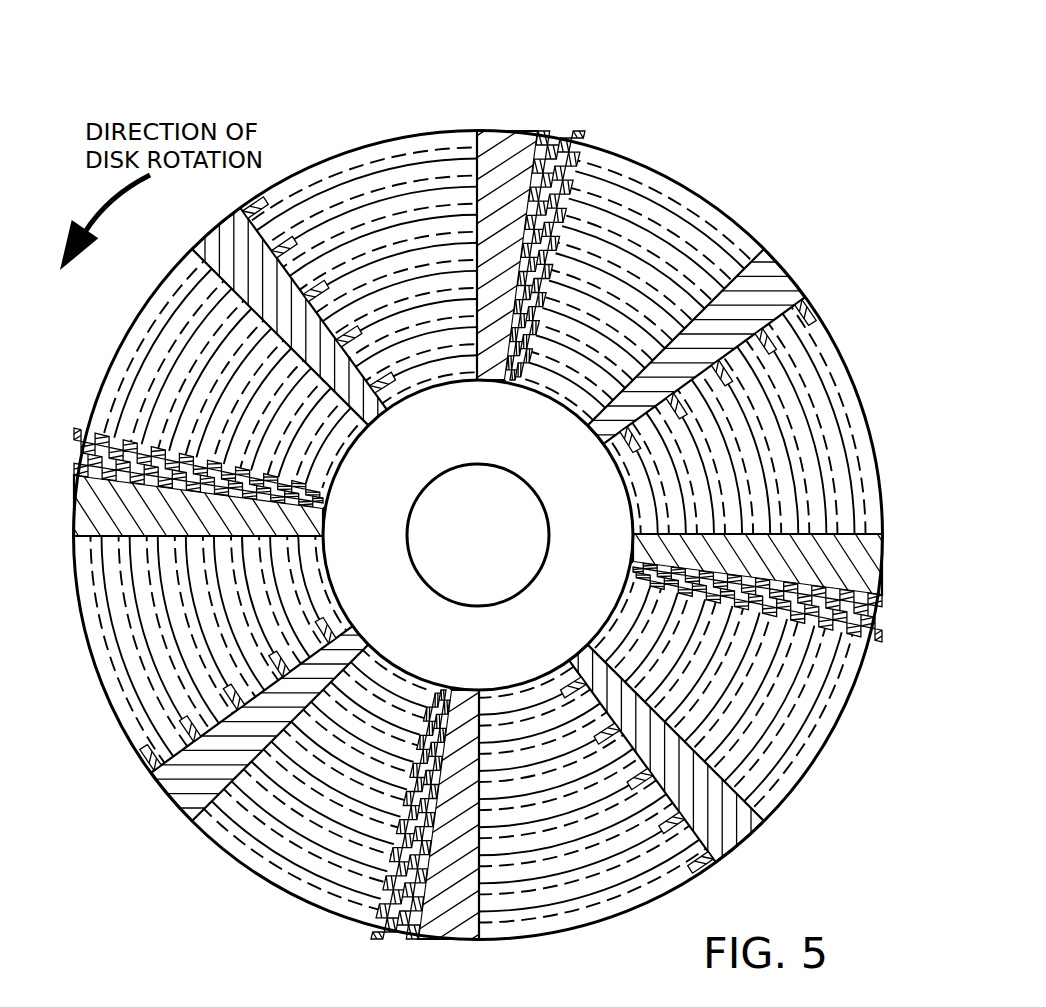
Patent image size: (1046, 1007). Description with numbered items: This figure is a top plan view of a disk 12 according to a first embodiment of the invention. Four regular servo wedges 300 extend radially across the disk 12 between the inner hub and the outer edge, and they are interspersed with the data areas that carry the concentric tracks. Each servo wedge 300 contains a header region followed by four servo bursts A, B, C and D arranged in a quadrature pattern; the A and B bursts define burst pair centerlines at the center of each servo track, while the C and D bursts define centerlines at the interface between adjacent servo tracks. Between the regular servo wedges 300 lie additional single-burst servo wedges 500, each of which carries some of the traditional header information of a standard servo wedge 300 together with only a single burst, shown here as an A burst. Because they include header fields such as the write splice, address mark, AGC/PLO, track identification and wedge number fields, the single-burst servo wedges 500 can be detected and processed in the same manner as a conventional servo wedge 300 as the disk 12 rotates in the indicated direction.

The disk 12 is at (835, 740).
The servo wedge 300 is at (482, 518).
The single-burst servo wedge 500 is at (208, 220).
The A burst A is at (706, 199).
The B burst B is at (593, 128).
The C burst C is at (553, 103).
The D burst D is at (567, 125).